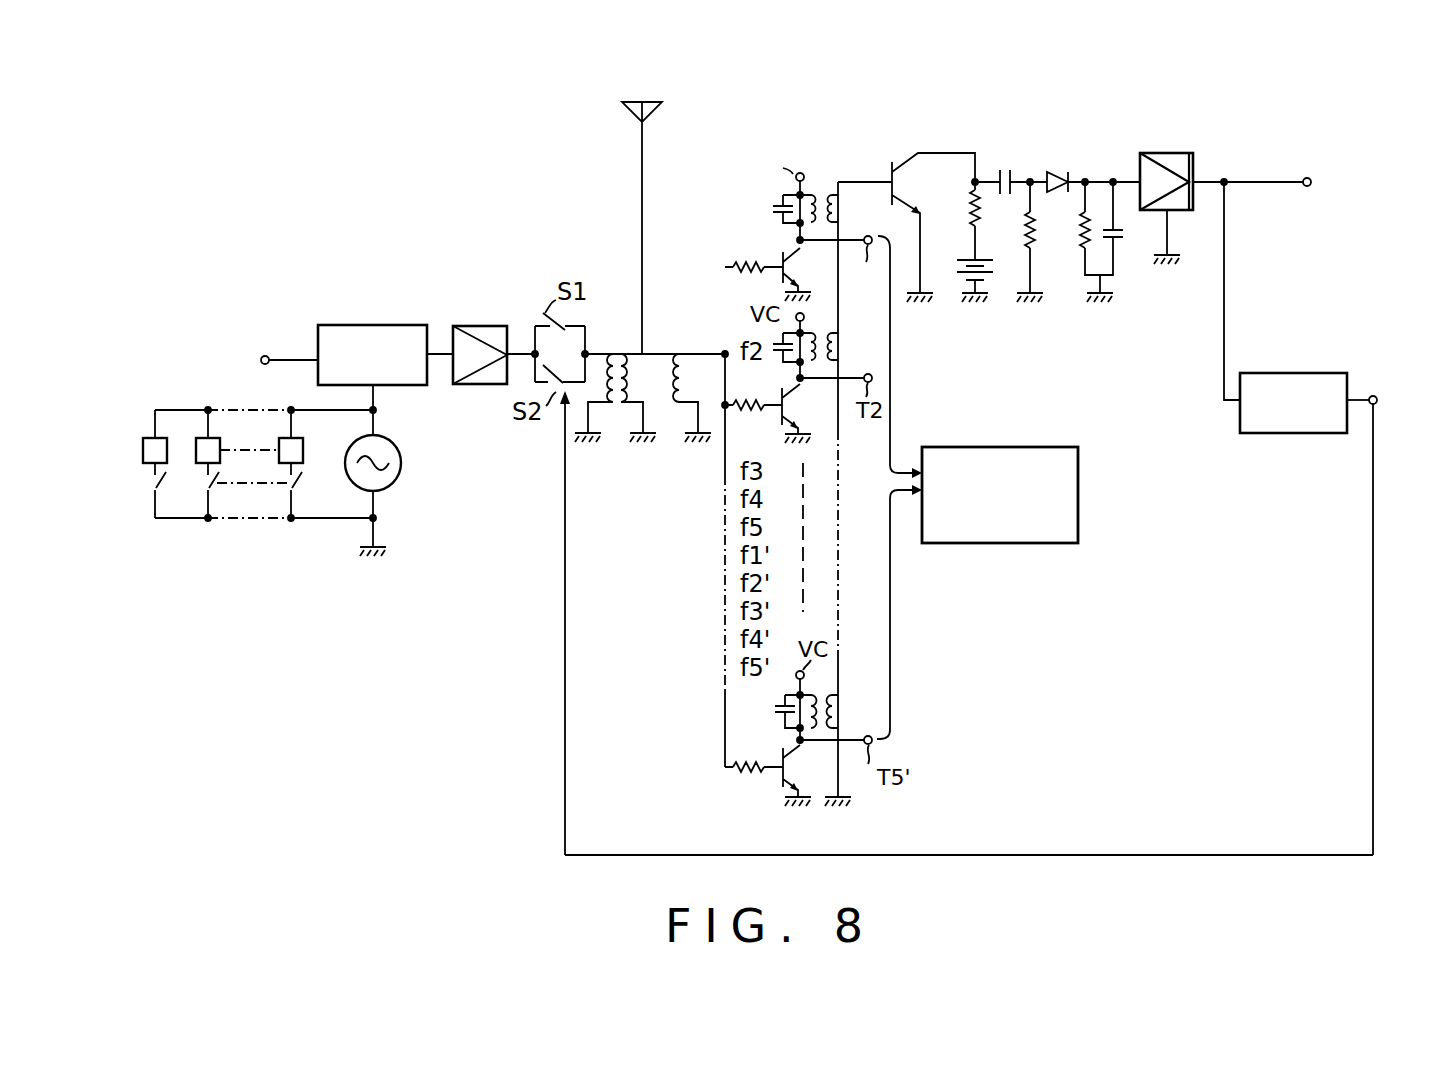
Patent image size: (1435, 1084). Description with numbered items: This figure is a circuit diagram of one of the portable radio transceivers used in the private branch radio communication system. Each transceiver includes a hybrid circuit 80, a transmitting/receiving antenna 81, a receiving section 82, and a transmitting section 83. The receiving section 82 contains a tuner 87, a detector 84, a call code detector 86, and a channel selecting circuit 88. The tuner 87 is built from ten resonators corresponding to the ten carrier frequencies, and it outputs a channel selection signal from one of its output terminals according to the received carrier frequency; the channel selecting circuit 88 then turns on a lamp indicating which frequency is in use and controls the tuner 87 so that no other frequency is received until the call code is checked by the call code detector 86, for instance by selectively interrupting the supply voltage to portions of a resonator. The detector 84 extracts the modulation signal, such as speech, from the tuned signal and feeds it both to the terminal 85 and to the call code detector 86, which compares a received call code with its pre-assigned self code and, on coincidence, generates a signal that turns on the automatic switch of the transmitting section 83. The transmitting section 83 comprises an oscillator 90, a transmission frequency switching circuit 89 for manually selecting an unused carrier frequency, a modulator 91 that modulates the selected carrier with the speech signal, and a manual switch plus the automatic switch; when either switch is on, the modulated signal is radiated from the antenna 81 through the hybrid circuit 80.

The hybrid circuit 80 is at (651, 340).
The transmitting/receiving antenna 81 is at (654, 111).
The receiving section 82 is at (1224, 541).
The transmitting section 83 is at (462, 302).
The detector 84 is at (1041, 171).
The terminal 85 is at (1308, 177).
The call code detector 86 is at (1325, 434).
The tuner 87 is at (820, 168).
The channel selecting circuit 88 is at (1078, 519).
The transmission frequency switching circuit 89 is at (149, 480).
The oscillator 90 is at (403, 467).
The modulator 91 is at (360, 325).